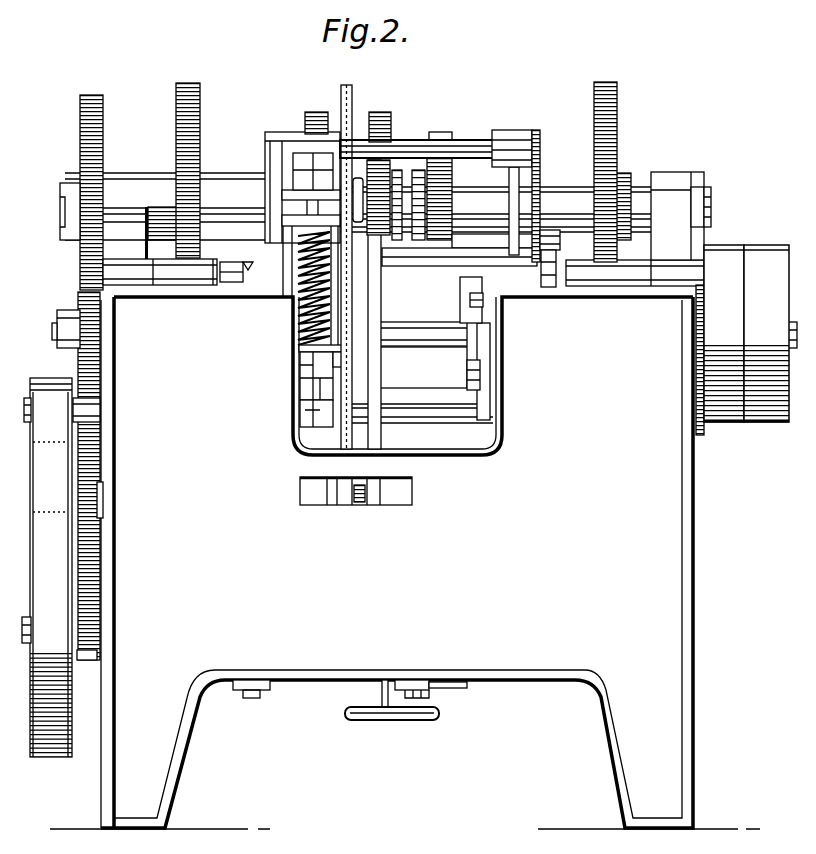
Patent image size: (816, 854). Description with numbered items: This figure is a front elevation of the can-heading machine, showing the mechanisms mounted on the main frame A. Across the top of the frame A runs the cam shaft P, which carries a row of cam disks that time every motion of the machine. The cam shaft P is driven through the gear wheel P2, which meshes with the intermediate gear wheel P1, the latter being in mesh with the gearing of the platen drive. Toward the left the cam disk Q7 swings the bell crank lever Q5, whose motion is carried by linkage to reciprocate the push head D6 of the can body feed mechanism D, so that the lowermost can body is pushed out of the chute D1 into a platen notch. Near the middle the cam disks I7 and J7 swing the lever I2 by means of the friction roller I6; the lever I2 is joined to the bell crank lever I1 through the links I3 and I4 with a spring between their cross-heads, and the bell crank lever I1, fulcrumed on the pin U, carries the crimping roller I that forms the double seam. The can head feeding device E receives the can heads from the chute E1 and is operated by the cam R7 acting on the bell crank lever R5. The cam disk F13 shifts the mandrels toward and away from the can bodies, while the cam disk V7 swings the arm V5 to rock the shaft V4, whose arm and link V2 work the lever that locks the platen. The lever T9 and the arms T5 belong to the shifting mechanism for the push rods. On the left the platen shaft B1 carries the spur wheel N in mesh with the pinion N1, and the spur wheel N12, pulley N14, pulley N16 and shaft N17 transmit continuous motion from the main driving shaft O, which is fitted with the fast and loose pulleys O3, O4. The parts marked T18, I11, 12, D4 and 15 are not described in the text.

The main frame A is at (405, 563).
The cam shaft P is at (232, 180).
The intermediate gear wheel P1 is at (82, 306).
The gear wheel P2 is at (79, 108).
The cam disk Q7 is at (190, 83).
The bell crank lever Q5 is at (200, 272).
The block T18 is at (243, 277).
The lever T9 is at (257, 278).
The arms T5 is at (290, 292).
The crimping roller I is at (305, 406).
The bell crank lever I1 is at (360, 372).
The lever I2 is at (313, 160).
The link I3 is at (300, 315).
The link I4 is at (280, 182).
The friction roller I6 is at (545, 231).
The cam disk I7 is at (316, 112).
The bracket I11 is at (562, 263).
The can head feeding device E is at (352, 254).
The chute E1 is at (378, 110).
The cam disk J7 is at (392, 128).
The cam disk V7 is at (443, 134).
The rock shaft V4 is at (452, 222).
The arm V5 is at (466, 262).
The link V2 is at (337, 492).
The cam disk F13 is at (535, 140).
The gear strip 12 is at (556, 196).
The cam R7 is at (607, 82).
The bell crank lever R5 is at (606, 273).
The main driving shaft O is at (423, 325).
The fast pulley O3 is at (725, 252).
The loose pulley O4 is at (768, 247).
The can body feed mechanism D is at (386, 304).
The chute D1 is at (369, 247).
The foot D4 is at (382, 695).
The push head D6 is at (364, 498).
The pin U is at (437, 414).
The spur wheel N is at (47, 567).
The pinion N1 is at (95, 536).
The spur wheel N12 is at (98, 654).
The pulley N14 is at (72, 707).
The pulley N16 is at (34, 380).
The shaft N17 is at (88, 412).
The pin 15 is at (50, 477).
The shaft B1 is at (99, 505).